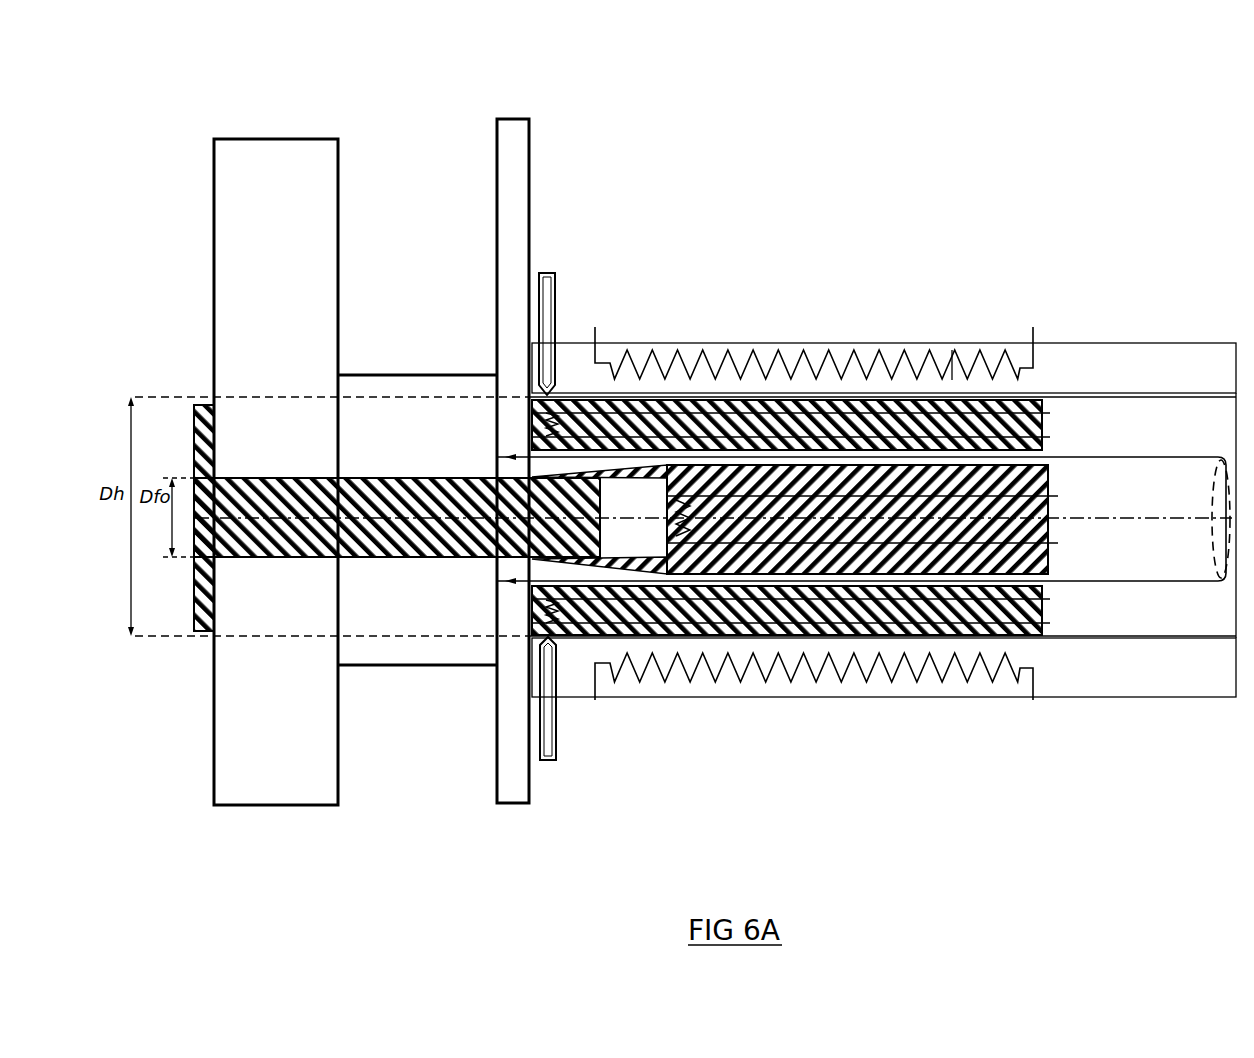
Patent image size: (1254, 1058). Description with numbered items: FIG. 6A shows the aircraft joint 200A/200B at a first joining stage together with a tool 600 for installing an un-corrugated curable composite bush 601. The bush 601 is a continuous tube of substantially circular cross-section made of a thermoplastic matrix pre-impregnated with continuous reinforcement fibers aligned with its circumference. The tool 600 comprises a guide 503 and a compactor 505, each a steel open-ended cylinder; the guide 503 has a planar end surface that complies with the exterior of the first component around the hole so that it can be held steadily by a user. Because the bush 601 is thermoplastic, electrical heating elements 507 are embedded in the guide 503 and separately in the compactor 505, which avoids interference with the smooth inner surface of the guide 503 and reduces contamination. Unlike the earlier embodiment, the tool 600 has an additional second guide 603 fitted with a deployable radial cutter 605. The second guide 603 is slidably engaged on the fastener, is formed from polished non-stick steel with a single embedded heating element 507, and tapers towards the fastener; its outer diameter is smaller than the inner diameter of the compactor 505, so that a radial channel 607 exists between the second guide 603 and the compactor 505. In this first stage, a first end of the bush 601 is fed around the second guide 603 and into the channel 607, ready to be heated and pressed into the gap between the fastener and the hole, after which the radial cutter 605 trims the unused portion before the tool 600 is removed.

The tool 600 is at (312, 148).
The deployable radial cutter 605 is at (557, 275).
The curable composite bush 601 is at (545, 443).
The electrical heating element 507 is at (560, 425).
The compactor 505 is at (810, 425).
The guide 503 is at (952, 350).
The radial channel 607 is at (1043, 455).
The second guide 603 is at (940, 600).
The joint 200A is at (842, 137).
The joint 200B is at (884, 667).